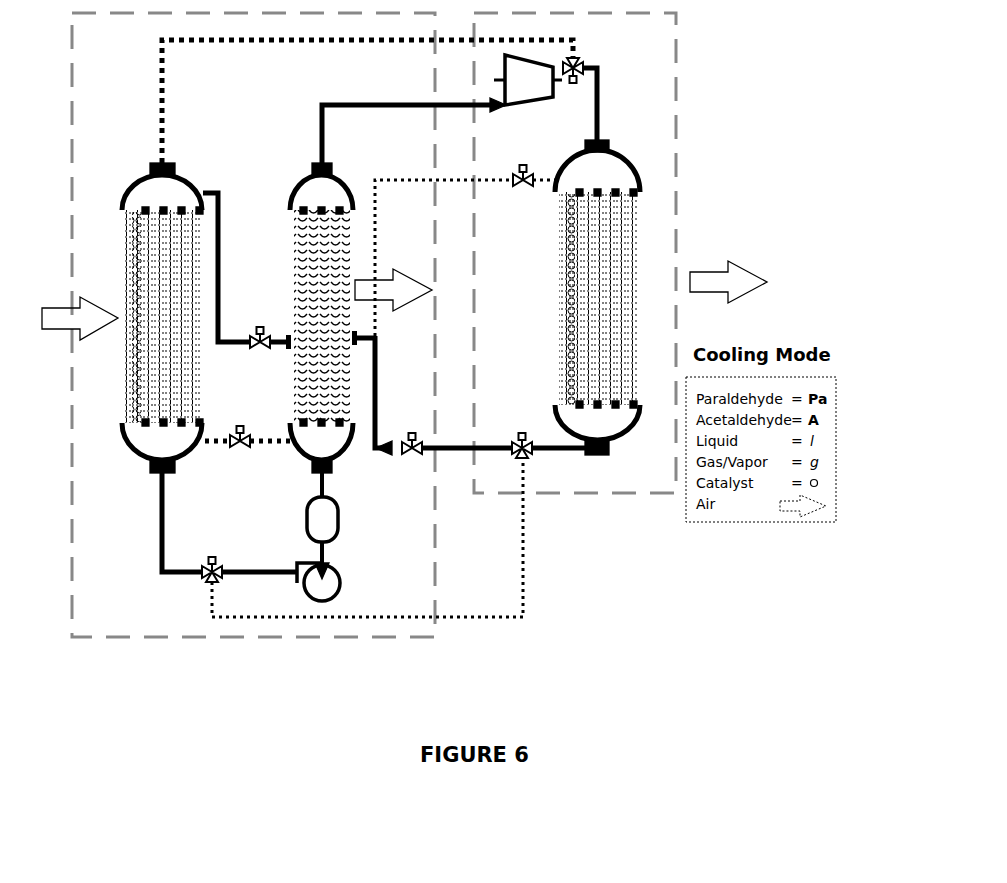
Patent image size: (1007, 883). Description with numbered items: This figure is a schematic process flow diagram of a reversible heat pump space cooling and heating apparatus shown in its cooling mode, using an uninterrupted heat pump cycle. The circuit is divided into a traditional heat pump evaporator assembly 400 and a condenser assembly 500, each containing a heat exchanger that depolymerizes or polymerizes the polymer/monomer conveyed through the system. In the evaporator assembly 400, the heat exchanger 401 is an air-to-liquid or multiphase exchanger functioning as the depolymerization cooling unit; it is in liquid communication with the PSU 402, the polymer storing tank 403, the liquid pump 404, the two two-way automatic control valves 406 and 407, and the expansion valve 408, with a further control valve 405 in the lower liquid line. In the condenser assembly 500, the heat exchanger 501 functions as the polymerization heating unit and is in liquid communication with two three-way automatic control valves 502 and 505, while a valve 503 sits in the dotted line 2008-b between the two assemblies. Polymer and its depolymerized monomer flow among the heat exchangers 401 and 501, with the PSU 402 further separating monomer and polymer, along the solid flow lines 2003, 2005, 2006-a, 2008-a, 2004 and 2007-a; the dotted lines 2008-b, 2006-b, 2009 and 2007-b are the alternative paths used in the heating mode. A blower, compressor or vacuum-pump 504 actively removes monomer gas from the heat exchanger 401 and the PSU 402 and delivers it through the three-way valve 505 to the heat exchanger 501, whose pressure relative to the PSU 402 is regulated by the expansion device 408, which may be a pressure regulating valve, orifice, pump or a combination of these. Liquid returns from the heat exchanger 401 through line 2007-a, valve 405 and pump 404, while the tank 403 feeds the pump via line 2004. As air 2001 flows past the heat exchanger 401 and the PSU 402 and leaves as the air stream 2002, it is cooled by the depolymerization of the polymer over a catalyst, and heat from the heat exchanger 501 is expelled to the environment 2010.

The evaporator assembly 400 is at (225, 325).
The heat exchanger 401 is at (153, 318).
The PSU 402 is at (307, 318).
The polymer storing tank 403 is at (305, 507).
The liquid pump 404 is at (301, 585).
The control valve 405 is at (212, 561).
The two-way automatic control valve 406 is at (239, 425).
The two-way automatic control valve 407 is at (260, 330).
The expansion valve 408 is at (408, 437).
The condenser assembly 500 is at (610, 253).
The heat exchanger 501 is at (603, 296).
The three-way automatic control valve 502 is at (522, 439).
The valve 503 is at (525, 167).
The blower, compressor or vacuum-pump 504 is at (528, 80).
The three-way automatic control valve 505 is at (588, 60).
The air 2001 is at (69, 313).
The air outlet stream 2002 is at (393, 283).
The flow line 2003 is at (247, 271).
The flow line 2004 is at (349, 560).
The flow line 2005 is at (414, 121).
The flow line 2006-a is at (565, 104).
The flow line 2006-b is at (367, 101).
The flow line 2007-a is at (199, 522).
The flow line 2007-b is at (367, 538).
The flow line 2008-a is at (487, 407).
The flow line 2008-b is at (454, 250).
The flow line 2009 is at (247, 457).
The environment 2010 is at (728, 274).